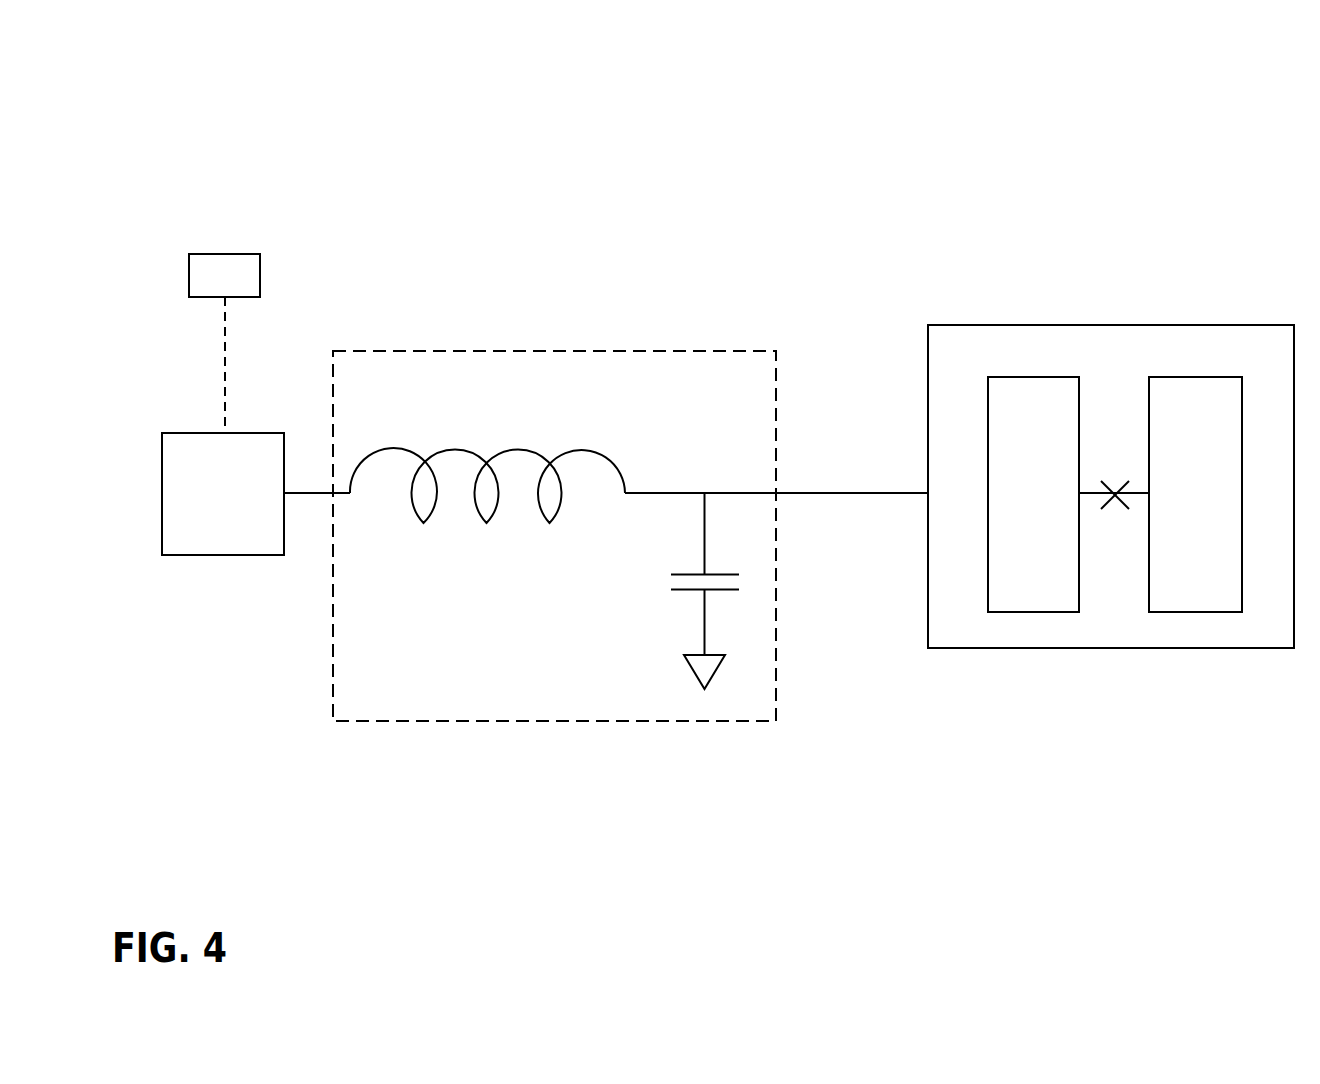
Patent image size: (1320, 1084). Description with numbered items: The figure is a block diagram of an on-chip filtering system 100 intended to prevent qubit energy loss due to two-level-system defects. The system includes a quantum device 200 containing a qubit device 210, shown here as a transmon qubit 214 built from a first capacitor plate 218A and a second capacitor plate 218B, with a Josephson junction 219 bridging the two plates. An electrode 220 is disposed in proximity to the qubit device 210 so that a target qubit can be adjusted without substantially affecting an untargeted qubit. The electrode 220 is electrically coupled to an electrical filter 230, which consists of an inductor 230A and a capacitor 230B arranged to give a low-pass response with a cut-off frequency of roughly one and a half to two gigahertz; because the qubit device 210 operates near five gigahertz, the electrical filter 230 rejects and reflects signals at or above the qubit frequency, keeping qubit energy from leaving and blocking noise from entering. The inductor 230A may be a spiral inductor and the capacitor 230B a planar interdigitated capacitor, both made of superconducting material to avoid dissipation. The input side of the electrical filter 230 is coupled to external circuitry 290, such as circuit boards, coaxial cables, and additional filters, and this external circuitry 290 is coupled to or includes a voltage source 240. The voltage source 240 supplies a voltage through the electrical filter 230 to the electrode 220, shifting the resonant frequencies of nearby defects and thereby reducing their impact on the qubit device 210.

The on-chip filtering system 100 is at (290, 70).
The quantum device 200 is at (445, 157).
The qubit device 210 is at (1104, 364).
The transmon qubit 214 is at (1133, 362).
The first capacitor plate 218A is at (1033, 494).
The second capacitor plate 218B is at (1195, 494).
The Josephson junction 219 is at (1099, 464).
The electrode 220 is at (1110, 324).
The electrical filter 230 is at (701, 350).
The inductor 230A is at (459, 405).
The capacitor 230B is at (632, 611).
The voltage source 240 is at (224, 343).
The external circuitry 290 is at (256, 494).